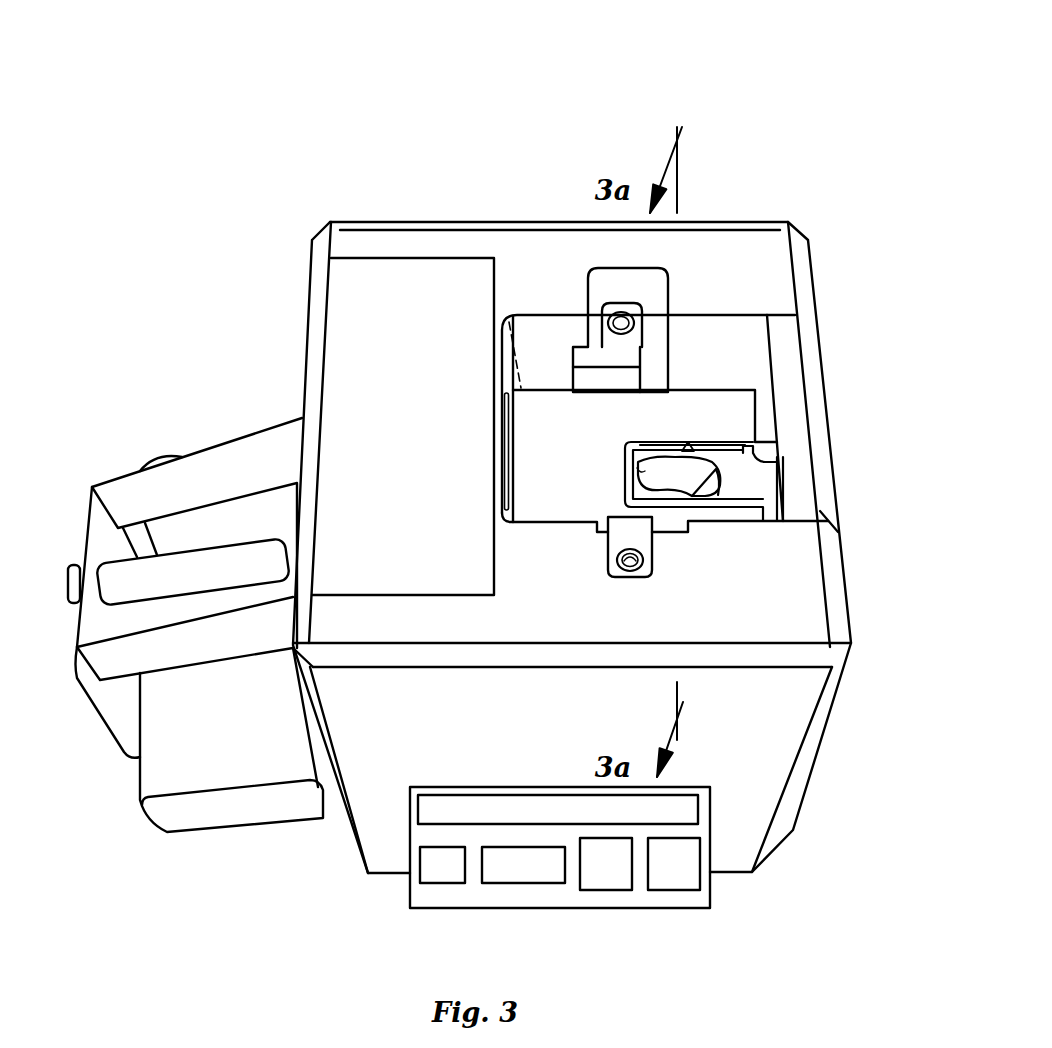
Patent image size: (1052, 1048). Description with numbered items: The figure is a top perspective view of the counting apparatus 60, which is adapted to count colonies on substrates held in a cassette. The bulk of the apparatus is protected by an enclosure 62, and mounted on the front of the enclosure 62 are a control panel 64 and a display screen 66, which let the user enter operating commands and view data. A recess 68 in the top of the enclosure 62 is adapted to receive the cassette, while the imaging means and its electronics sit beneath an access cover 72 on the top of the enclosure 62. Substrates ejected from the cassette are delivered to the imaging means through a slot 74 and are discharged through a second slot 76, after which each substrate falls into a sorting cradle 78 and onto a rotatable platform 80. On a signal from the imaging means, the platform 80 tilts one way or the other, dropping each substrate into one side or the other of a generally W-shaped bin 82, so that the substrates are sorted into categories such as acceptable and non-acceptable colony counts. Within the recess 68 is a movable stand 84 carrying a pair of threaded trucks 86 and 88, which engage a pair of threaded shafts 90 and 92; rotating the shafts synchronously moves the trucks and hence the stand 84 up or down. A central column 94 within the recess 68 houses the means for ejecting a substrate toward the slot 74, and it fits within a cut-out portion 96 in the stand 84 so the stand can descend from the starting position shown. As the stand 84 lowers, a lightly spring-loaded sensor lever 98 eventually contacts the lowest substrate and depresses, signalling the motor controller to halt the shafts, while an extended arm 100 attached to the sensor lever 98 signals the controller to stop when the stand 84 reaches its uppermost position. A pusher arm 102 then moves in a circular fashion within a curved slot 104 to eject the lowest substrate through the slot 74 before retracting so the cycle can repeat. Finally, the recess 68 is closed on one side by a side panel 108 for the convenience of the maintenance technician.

The counting apparatus 60 is at (697, 70).
The enclosure 62 is at (806, 604).
The control panel 64 is at (638, 895).
The display screen 66 is at (492, 805).
The recess 68 is at (765, 341).
The access cover 72 is at (345, 294).
The slot 74 is at (512, 434).
The slot 76 is at (286, 506).
The sorting cradle 78 is at (121, 497).
The rotatable platform 80 is at (110, 582).
The W-shaped bin 82 is at (164, 775).
The movable stand 84 is at (745, 400).
The threaded truck 86 is at (628, 354).
The threaded truck 88 is at (620, 538).
The threaded shaft 90 is at (620, 320).
The threaded shaft 92 is at (633, 568).
The central column 94 is at (765, 483).
The cut-out portion 96 is at (710, 441).
The sensor lever 98 is at (684, 444).
The extended arm 100 is at (780, 460).
The pusher arm 102 is at (705, 490).
The curved slot 104 is at (640, 469).
The side panel 108 is at (832, 522).